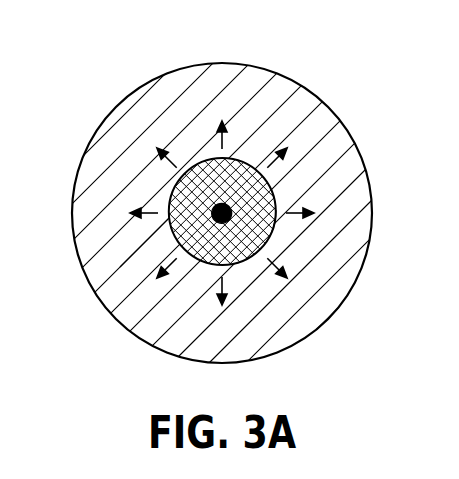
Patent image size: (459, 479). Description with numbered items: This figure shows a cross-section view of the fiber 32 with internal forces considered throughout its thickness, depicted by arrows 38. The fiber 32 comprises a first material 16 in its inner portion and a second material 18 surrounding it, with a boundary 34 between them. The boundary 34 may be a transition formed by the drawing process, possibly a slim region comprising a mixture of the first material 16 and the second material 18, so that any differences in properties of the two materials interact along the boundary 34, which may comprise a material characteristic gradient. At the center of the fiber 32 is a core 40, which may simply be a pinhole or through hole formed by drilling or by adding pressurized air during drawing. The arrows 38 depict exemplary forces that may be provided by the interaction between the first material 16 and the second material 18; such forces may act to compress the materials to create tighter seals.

The fiber 32 is at (87, 34).
The second material 18 is at (275, 88).
The first material 16 is at (276, 193).
The core 40 is at (213, 207).
The boundary 34 is at (275, 232).
The arrows 38 is at (130, 231).